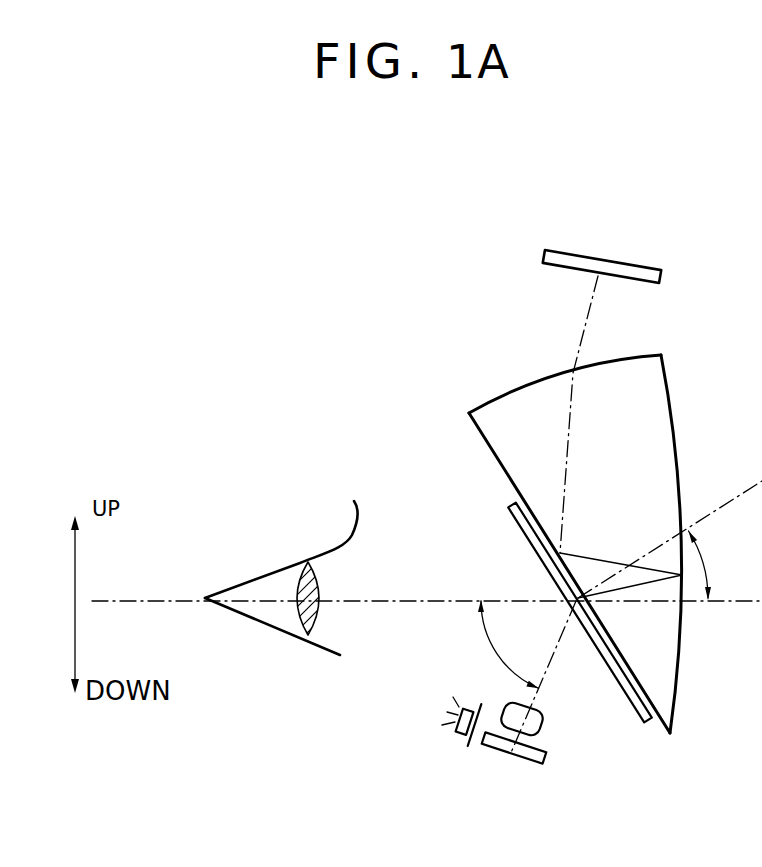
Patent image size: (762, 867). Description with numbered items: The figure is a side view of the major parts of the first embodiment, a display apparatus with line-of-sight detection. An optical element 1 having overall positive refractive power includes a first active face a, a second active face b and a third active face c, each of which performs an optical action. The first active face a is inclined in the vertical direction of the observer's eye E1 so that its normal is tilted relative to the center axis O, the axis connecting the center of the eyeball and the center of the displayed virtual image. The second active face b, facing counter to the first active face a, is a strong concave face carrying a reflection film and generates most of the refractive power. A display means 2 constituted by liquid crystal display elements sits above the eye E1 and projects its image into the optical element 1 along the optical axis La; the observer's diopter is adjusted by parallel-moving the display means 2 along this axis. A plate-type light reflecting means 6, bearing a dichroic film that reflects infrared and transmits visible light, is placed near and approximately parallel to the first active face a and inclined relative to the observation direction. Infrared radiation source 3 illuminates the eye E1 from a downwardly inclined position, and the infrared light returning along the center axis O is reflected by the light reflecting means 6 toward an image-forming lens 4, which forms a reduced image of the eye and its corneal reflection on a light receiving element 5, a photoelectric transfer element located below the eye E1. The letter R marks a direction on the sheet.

The optical element 1 is at (590, 519).
The display means 2 is at (590, 256).
The infrared radiation source 3 is at (468, 740).
The image-forming lens 4 is at (540, 722).
The light receiving element 5 is at (542, 762).
The light reflecting means 6 is at (648, 728).
The first active face a is at (492, 453).
The second active face b is at (677, 455).
The third active face c is at (620, 363).
The optical axis La is at (580, 335).
The eye E1 is at (297, 643).
The center axis O is at (427, 582).
The right direction R is at (754, 143).